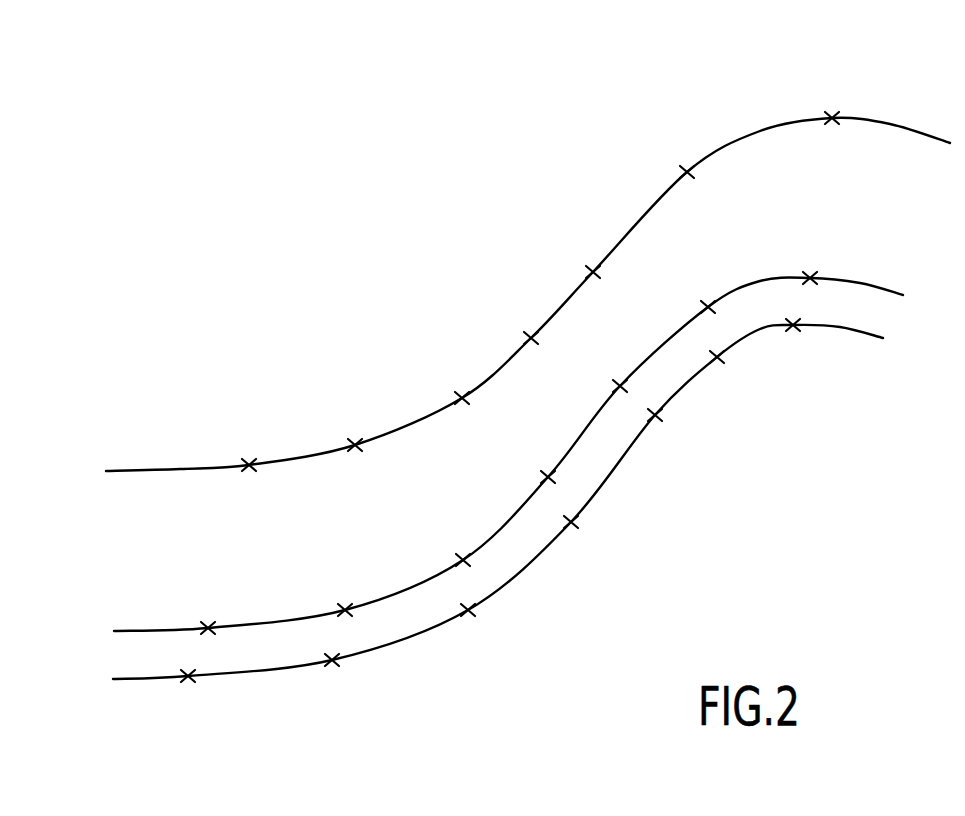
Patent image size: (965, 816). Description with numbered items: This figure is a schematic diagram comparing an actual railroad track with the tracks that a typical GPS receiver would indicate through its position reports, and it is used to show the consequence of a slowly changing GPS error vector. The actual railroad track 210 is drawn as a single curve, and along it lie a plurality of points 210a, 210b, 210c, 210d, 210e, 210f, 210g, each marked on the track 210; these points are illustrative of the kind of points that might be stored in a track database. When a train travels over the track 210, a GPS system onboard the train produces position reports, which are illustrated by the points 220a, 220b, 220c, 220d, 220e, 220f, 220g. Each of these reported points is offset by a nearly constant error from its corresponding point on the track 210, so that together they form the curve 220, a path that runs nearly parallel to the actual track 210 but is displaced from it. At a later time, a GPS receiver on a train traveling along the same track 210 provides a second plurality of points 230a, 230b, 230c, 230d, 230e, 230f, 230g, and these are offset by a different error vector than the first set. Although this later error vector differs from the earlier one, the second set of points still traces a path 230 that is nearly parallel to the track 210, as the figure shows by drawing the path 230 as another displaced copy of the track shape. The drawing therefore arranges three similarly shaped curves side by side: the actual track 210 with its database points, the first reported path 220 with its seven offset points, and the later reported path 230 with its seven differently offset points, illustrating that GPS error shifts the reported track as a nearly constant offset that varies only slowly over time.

The path 230 is at (135, 471).
The point 230a is at (249, 463).
The point 230b is at (355, 445).
The point 230c is at (462, 398).
The point 230d is at (531, 338).
The point 230e is at (593, 272).
The point 230f is at (687, 172).
The point 230g is at (832, 118).
The railroad track 210 is at (143, 630).
The point 210a is at (208, 628).
The point 210b is at (345, 610).
The point 210c is at (463, 560).
The point 210d is at (548, 475).
The point 210e is at (620, 385).
The point 210f is at (708, 307).
The point 210g is at (810, 278).
The curve 220 is at (135, 679).
The point 220a is at (188, 677).
The point 220b is at (332, 660).
The point 220c is at (468, 610).
The point 220d is at (571, 522).
The point 220e is at (655, 415).
The point 220f is at (717, 357).
The point 220g is at (793, 325).